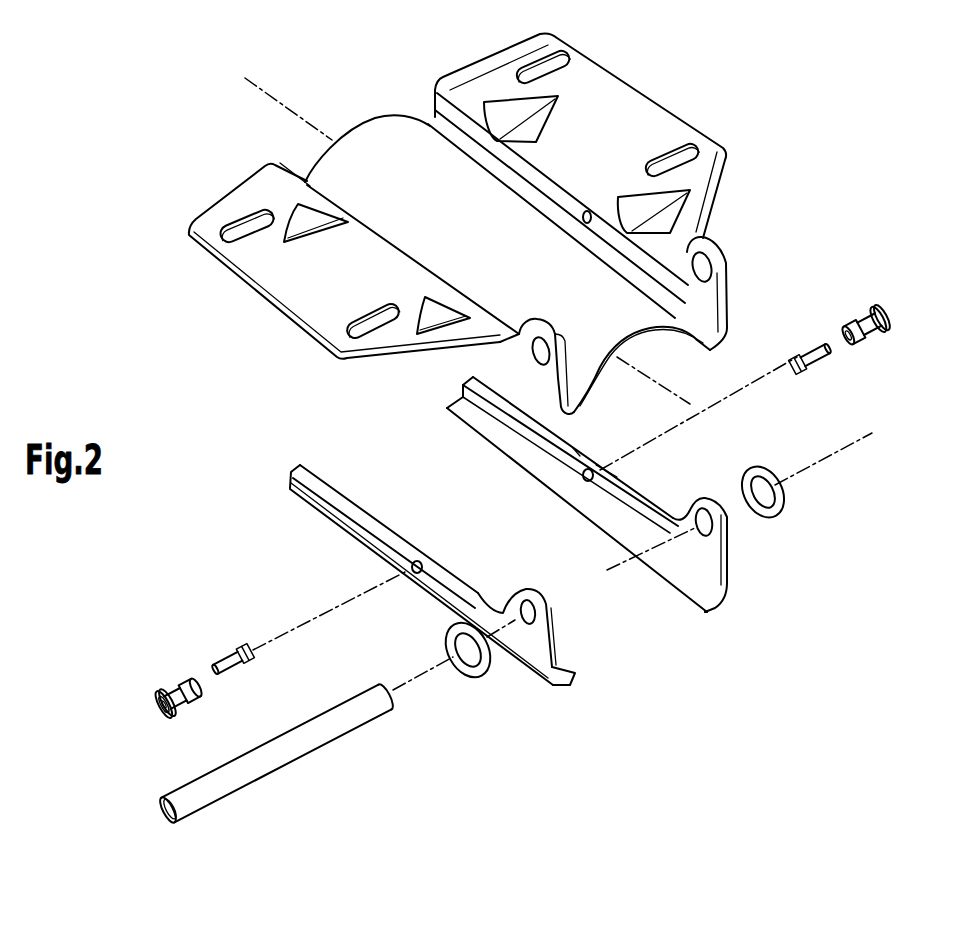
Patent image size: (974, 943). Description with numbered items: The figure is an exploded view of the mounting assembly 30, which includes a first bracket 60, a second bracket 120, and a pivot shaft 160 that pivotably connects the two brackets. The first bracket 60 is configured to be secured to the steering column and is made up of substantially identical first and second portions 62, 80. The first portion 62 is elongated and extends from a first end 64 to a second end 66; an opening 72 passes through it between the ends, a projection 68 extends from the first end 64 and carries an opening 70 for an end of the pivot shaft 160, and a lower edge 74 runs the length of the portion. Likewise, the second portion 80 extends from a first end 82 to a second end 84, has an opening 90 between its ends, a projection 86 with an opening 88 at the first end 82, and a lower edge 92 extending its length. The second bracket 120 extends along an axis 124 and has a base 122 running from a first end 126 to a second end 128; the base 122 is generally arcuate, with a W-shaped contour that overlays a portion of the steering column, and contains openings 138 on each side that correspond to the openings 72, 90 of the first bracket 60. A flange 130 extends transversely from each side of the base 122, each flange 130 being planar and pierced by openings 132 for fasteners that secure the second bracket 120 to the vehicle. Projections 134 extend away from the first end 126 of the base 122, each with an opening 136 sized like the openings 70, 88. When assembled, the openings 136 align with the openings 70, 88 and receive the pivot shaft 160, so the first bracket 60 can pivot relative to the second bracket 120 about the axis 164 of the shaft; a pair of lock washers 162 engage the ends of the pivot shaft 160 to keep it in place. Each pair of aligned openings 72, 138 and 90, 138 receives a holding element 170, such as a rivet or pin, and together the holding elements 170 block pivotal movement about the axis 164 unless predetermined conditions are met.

The mounting assembly 30 is at (151, 384).
The first bracket 60 is at (650, 653).
The first portion 62 is at (533, 690).
The first end 64 is at (567, 687).
The second end 66 is at (292, 480).
The projection 68 is at (510, 620).
The opening 70 is at (532, 628).
The opening 72 is at (412, 567).
The lower edge 74 is at (563, 668).
The second portion 80 is at (717, 612).
The first end 82 is at (732, 588).
The second end 84 is at (462, 418).
The projection 86 is at (714, 557).
The opening 88 is at (703, 535).
The opening 90 is at (584, 476).
The lower edge 92 is at (607, 542).
The second bracket 120 is at (386, 97).
The base 122 is at (612, 292).
The axis 124 is at (286, 102).
The first end 126 is at (593, 388).
The second end 128 is at (330, 168).
The flange 130 is at (622, 112).
The opening 132 is at (568, 58).
The projection 134 is at (724, 290).
The opening 136 is at (704, 281).
The opening 138 is at (587, 212).
The pivot shaft 160 is at (323, 730).
The lock washer 162 is at (780, 505).
The axis 164 is at (842, 455).
The holding element 170 is at (834, 330).